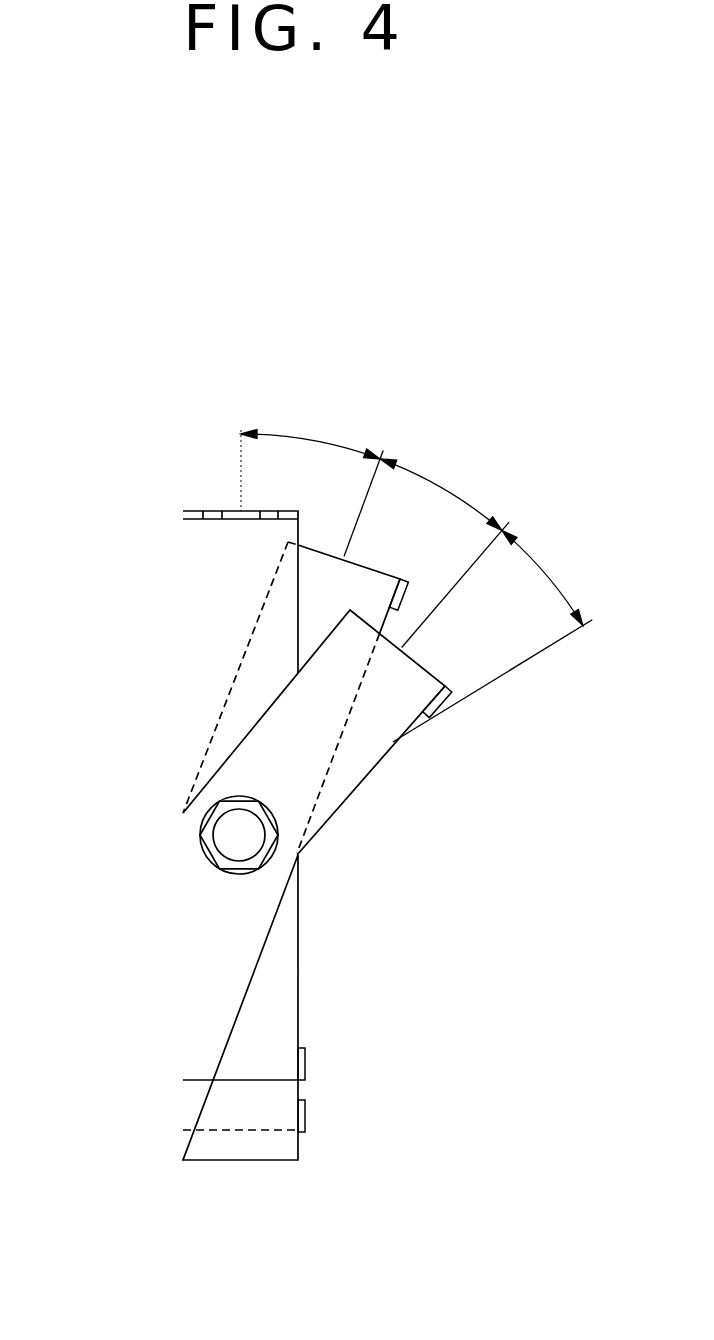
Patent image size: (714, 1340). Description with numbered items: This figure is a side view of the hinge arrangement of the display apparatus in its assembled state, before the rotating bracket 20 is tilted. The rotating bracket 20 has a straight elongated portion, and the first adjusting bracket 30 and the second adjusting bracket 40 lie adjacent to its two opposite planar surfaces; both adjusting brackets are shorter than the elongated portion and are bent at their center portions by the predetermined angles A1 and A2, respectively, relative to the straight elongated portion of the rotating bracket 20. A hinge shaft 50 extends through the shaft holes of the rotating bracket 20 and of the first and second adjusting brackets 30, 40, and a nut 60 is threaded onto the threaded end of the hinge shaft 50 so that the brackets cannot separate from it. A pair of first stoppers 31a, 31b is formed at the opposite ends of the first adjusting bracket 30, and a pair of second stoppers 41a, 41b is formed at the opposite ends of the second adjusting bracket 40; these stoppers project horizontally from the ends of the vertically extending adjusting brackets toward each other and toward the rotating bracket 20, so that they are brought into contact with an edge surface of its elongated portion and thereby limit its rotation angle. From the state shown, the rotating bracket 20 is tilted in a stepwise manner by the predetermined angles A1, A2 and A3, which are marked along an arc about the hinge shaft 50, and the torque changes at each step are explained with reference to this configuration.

The rotating bracket 20 is at (183, 587).
The first adjusting bracket 30 is at (230, 688).
The first stopper 31a is at (401, 594).
The first stopper 31b is at (306, 1110).
The second adjusting bracket 40 is at (360, 782).
The second stopper 41a is at (439, 699).
The second stopper 41b is at (306, 1057).
The hinge shaft 50 is at (216, 830).
The nut 60 is at (213, 862).
The predetermined angle A1 is at (312, 479).
The predetermined angle A2 is at (444, 551).
The predetermined angle A3 is at (493, 637).